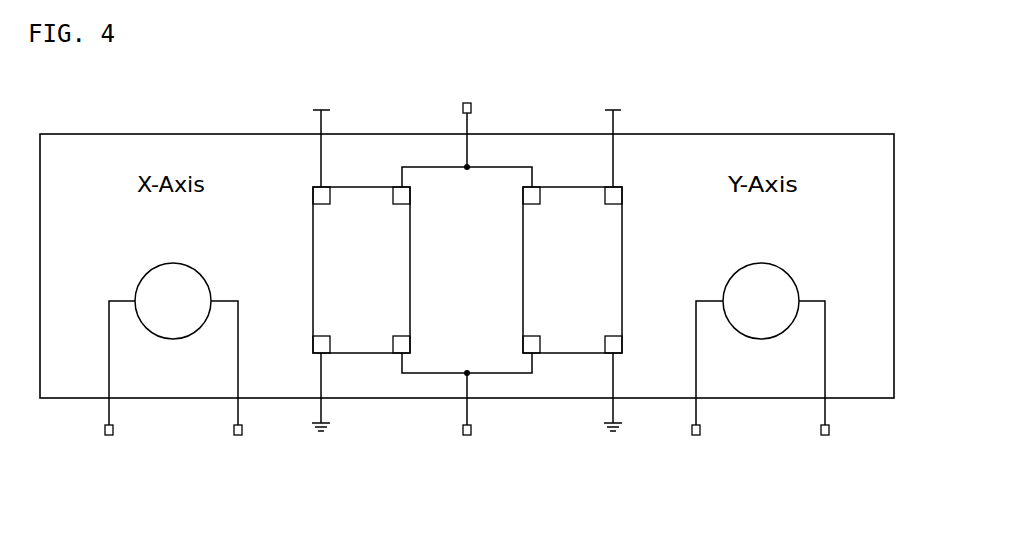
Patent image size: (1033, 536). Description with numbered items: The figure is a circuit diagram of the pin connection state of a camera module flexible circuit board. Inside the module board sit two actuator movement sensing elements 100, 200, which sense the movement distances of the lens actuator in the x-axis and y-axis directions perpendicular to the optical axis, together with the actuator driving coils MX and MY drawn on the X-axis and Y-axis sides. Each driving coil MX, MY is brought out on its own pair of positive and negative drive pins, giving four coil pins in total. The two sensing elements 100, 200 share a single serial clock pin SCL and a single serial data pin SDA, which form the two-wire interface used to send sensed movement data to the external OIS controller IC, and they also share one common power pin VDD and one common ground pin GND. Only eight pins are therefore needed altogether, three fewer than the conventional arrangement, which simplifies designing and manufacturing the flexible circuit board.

The actuator movement sensing element 100 is at (313, 270).
The actuator movement sensing element 200 is at (622, 269).
The actuator driving coil MX is at (173, 363).
The actuator driving coil MY is at (760, 363).
The power pin VDD is at (467, 135).
The ground pin GND is at (467, 408).
The serial clock pin SCL is at (467, 133).
The serial data pin SDA is at (467, 408).